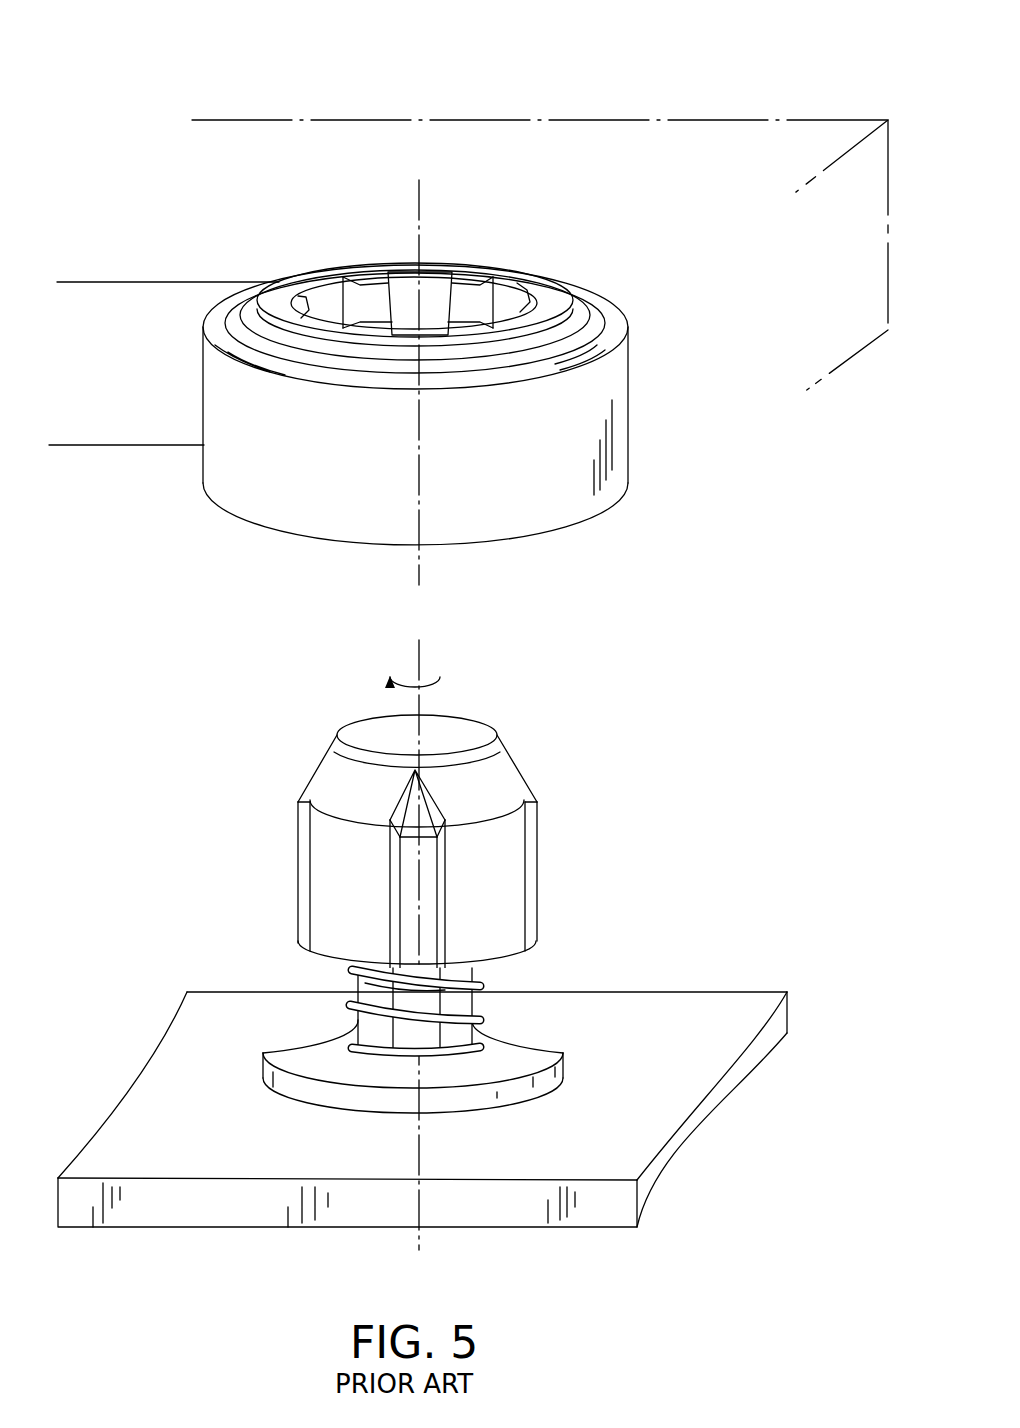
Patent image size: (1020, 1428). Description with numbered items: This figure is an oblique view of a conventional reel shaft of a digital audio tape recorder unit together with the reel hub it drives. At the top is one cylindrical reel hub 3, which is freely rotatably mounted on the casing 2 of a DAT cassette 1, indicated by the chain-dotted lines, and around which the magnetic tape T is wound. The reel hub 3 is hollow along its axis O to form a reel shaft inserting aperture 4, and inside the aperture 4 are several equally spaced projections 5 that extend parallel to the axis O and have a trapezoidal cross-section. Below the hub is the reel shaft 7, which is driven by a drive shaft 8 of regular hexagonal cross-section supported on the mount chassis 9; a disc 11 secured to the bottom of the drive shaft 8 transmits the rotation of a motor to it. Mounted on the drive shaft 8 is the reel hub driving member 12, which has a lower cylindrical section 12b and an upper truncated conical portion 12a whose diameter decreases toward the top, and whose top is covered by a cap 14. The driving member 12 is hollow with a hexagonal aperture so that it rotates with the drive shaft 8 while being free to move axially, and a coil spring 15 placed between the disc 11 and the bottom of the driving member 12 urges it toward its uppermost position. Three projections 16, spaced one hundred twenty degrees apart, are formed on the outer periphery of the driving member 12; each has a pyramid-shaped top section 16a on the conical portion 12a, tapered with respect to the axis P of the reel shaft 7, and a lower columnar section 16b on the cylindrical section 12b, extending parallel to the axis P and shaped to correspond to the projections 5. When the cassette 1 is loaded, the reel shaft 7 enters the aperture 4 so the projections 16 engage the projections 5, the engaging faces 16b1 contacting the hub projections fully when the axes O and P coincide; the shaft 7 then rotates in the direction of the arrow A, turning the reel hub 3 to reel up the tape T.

The DAT cassette 1 is at (600, 98).
The casing 2 is at (777, 118).
The reel hub 3 is at (528, 287).
The reel shaft inserting aperture 4 is at (508, 282).
The projection 5 is at (375, 278).
The axis of the reel hub O is at (424, 200).
The magnetic tape T is at (181, 309).
The reel shaft 7 is at (347, 712).
The drive shaft 8 is at (460, 1003).
The mount chassis 9 is at (653, 1100).
The disc 11 is at (527, 1053).
The reel hub driving member 12 is at (327, 782).
The upper truncated conical portion 12a is at (357, 795).
The lower cylindrical section 12b is at (340, 865).
The cap 14 is at (488, 748).
The coil spring 15 is at (350, 1007).
The projection 16 is at (455, 807).
The pyramid-shaped top section 16a is at (422, 818).
The lower columnar section 16b is at (425, 885).
The engaging face 16b1 is at (450, 932).
The axis of the reel shaft P is at (418, 657).
The direction of rotation A is at (437, 673).